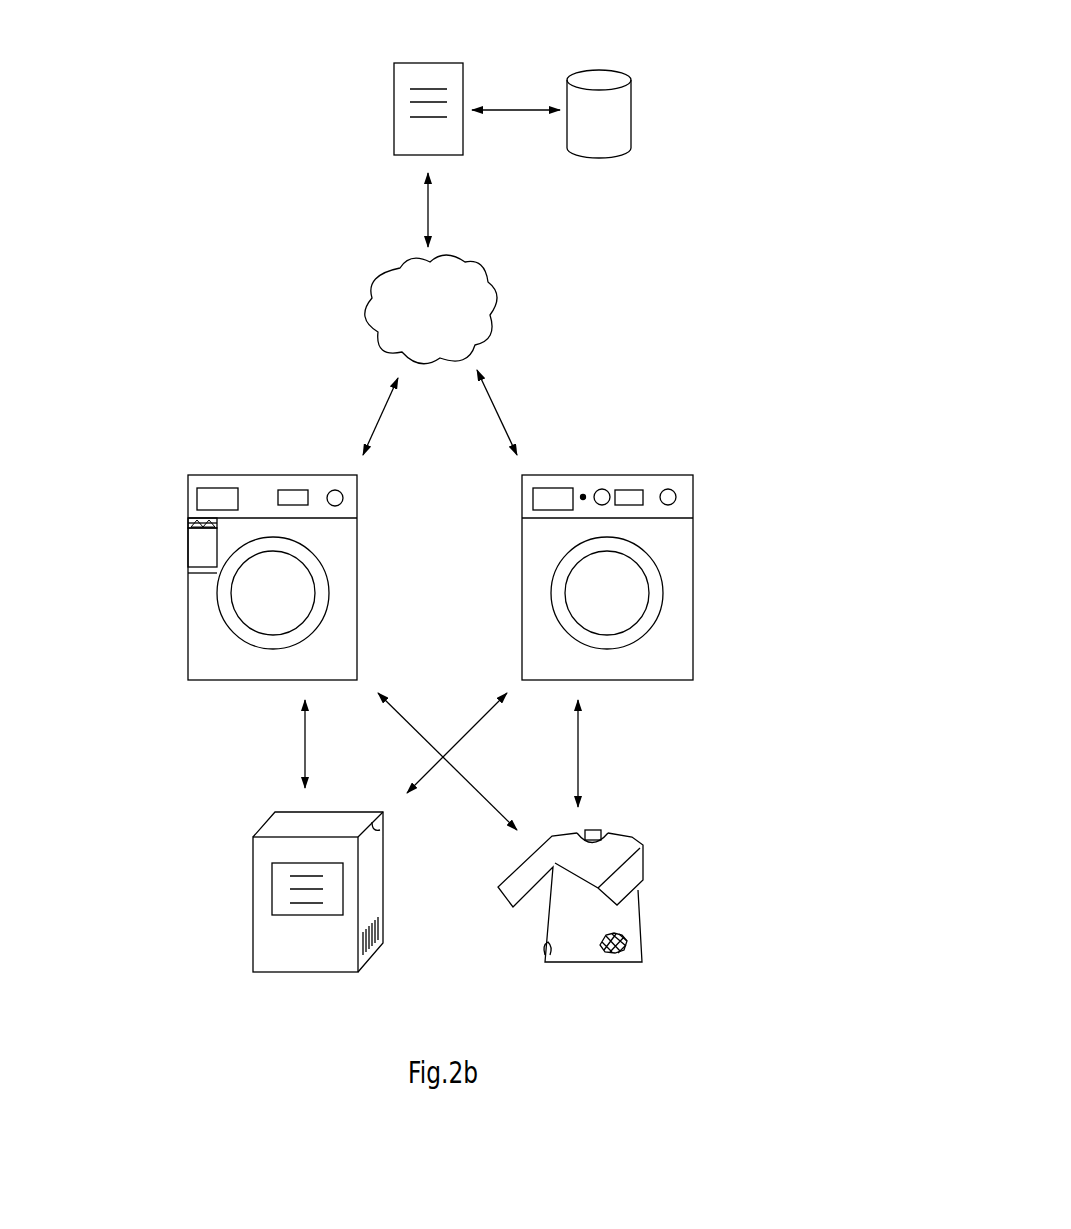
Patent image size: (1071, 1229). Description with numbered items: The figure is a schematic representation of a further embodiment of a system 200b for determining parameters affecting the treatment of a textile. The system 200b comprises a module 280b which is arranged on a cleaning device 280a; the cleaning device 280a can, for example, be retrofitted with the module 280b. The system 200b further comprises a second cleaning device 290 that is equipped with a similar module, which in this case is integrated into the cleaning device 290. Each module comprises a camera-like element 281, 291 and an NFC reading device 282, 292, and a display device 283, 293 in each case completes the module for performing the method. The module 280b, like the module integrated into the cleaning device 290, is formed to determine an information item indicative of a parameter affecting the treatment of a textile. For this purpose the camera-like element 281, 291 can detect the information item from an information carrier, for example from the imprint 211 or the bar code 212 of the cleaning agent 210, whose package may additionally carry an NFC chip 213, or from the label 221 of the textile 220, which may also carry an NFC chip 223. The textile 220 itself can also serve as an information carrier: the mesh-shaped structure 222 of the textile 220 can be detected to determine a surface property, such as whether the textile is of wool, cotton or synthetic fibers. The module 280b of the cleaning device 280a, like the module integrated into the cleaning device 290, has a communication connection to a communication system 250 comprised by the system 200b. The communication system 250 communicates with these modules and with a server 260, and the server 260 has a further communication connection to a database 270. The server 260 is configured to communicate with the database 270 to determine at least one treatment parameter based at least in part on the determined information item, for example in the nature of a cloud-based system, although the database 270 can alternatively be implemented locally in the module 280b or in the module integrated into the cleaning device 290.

The system 200b is at (735, 86).
The server 260 is at (394, 115).
The database 270 is at (631, 115).
The communication system 250 is at (431, 309).
The cleaning device 280a is at (188, 640).
The module 280b is at (188, 565).
The camera-like element 281 is at (188, 525).
The NFC reading device 282 is at (212, 525).
The display device 283 is at (197, 548).
The cleaning device 290 is at (693, 637).
The camera-like element 291 is at (585, 494).
The NFC reading device 292 is at (635, 489).
The display device 293 is at (543, 487).
The cleaning agent 210 is at (330, 972).
The imprint 211 is at (295, 915).
The bar code 212 is at (375, 950).
The NFC chip 213 is at (382, 828).
The textile 220 is at (572, 963).
The label 221 is at (600, 832).
The structure 222 is at (617, 955).
The NFC chip 223 is at (543, 948).